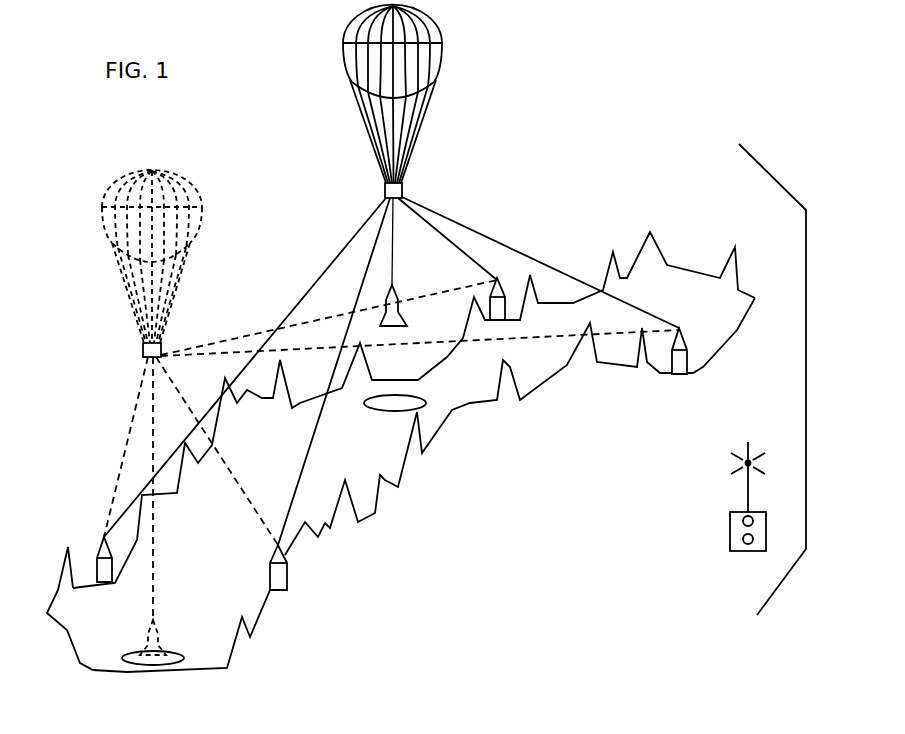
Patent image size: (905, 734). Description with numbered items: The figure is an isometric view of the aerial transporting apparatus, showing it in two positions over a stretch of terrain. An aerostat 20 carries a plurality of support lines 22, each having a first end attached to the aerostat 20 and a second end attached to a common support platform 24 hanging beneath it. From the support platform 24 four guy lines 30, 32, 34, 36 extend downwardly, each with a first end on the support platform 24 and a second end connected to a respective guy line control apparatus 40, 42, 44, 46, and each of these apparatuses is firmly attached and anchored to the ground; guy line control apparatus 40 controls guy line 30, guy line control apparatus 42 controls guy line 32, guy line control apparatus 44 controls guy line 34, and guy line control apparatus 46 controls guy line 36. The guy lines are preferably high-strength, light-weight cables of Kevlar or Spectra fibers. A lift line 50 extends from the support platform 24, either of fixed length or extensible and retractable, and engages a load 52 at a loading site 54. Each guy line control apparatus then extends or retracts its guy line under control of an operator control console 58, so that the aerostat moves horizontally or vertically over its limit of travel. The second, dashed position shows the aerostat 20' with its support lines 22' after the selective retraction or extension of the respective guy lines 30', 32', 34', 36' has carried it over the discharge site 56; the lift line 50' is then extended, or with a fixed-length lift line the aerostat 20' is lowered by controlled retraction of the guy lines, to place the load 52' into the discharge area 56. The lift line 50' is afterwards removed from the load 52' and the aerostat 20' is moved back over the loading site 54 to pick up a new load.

The aerostat 20 is at (426, 49).
The support lines 22 is at (433, 122).
The support platform 24 is at (405, 185).
The guy line 30 is at (540, 262).
The guy line 32 is at (457, 238).
The guy line 34 is at (334, 371).
The guy line 36 is at (245, 362).
The guy line control apparatus 40 is at (685, 327).
The guy line control apparatus 42 is at (500, 283).
The guy line control apparatus 44 is at (283, 555).
The guy line control apparatus 46 is at (100, 545).
The lift line 50 is at (441, 232).
The load 52 is at (410, 285).
The loading site 54 is at (425, 405).
The discharge site 56 is at (125, 660).
The operator control console 58 is at (730, 532).
The aerostat 20' is at (154, 177).
The support lines 22' is at (186, 281).
The guy line 30' is at (420, 360).
The guy line 32' is at (329, 306).
The guy line 34' is at (217, 451).
The guy line 36' is at (97, 447).
The lift line 50' is at (191, 488).
The load 52' is at (185, 611).